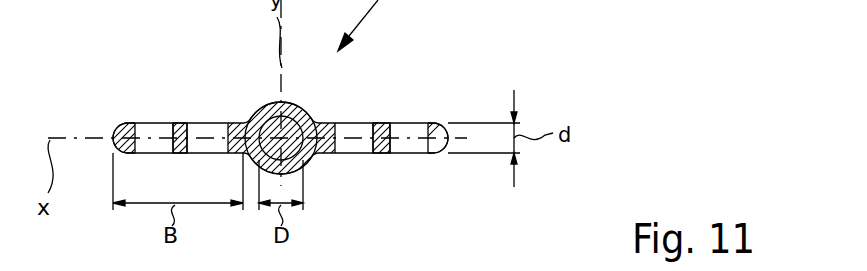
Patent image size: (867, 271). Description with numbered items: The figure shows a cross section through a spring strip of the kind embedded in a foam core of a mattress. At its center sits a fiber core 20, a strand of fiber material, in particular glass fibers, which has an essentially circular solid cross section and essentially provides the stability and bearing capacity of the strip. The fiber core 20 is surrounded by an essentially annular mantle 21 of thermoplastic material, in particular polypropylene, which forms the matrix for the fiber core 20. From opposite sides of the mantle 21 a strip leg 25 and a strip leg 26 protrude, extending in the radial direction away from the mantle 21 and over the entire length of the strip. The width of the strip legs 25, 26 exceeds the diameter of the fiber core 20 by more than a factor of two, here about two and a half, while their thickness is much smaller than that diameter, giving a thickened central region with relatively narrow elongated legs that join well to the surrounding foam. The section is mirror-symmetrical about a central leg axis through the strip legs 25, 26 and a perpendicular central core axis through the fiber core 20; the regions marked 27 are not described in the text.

The fiber core 20 is at (293, 102).
The mantle 21 is at (264, 112).
The strip leg 25 is at (129, 123).
The strip leg 26 is at (432, 128).
The arm section 27 is at (212, 133).